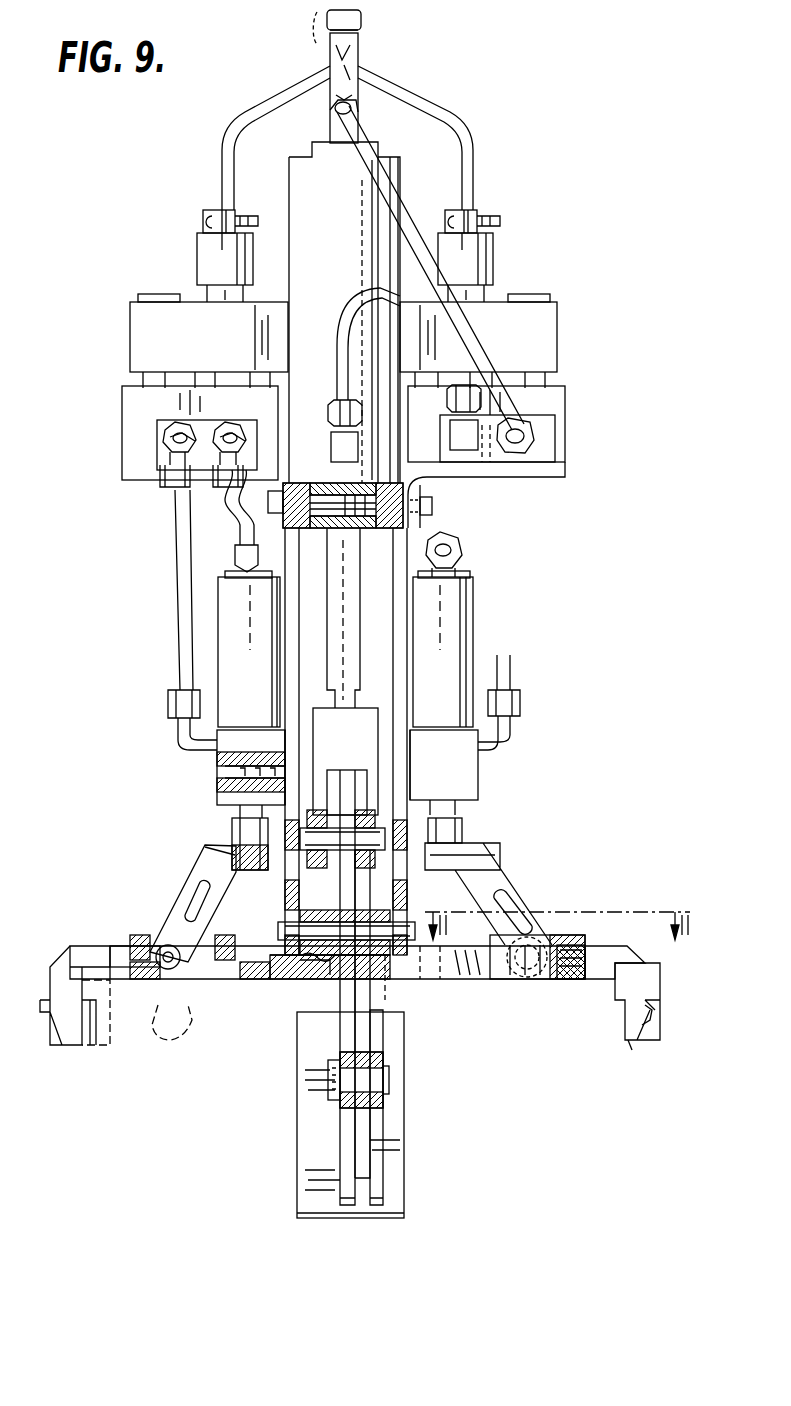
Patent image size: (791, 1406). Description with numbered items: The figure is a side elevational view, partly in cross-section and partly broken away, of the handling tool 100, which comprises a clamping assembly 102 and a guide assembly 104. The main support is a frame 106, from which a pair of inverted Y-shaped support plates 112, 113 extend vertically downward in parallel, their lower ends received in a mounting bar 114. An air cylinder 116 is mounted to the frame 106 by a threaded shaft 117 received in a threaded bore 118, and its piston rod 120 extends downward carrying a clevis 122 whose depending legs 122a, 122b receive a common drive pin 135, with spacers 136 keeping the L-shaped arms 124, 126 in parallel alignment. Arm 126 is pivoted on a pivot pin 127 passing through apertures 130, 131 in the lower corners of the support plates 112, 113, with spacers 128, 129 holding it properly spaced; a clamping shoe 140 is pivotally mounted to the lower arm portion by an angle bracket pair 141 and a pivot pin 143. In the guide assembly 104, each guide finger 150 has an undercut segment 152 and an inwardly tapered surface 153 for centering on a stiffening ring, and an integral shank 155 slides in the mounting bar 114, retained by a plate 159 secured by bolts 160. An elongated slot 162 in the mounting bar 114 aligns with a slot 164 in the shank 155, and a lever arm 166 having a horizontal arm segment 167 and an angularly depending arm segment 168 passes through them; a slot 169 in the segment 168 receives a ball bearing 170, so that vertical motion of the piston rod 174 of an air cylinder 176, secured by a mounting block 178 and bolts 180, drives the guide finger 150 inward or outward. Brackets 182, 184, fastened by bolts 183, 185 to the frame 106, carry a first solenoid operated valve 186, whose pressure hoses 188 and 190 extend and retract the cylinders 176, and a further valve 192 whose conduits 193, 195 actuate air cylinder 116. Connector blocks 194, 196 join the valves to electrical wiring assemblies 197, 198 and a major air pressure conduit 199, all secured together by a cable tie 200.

The handling tool 100 is at (642, 182).
The clamping assembly 102 is at (247, 1168).
The guide assembly 104 is at (592, 795).
The frame 106 is at (440, 545).
The support plate 112 is at (290, 665).
The support plate 113 is at (393, 660).
The mounting bar 114 is at (490, 979).
The air cylinder 116 is at (358, 236).
The threaded shaft 117 is at (352, 470).
The threaded bore 118 is at (335, 520).
The piston rod 120 is at (356, 611).
The clevis 122 is at (358, 731).
The depending leg of clevis 122a is at (285, 778).
The depending leg of clevis 122b is at (393, 800).
The L-shaped arm 124 is at (340, 1000).
The L-shaped arm 126 is at (375, 1010).
The pivot pin 127 is at (365, 950).
The spacer 128 is at (405, 920).
The spacer 129 is at (300, 965).
The aperture 130 is at (410, 955).
The aperture 131 is at (285, 968).
The common drive pin 135 is at (350, 885).
The spacer 136 is at (358, 763).
The clamping shoe 140 is at (404, 1185).
The angle bracket pair 141 is at (345, 1200).
The pivot pin 143 is at (383, 1080).
The guide finger 150 is at (44, 1015).
The undercut segment 152 is at (652, 1015).
The inwardly tapered surface 153 is at (640, 1045).
The integral shank 155 is at (607, 960).
The plate 159 is at (545, 935).
The bolt 160 is at (565, 975).
The elongated slot 162 is at (165, 985).
The elongated slot 164 is at (130, 950).
The lever arm 166 is at (500, 860).
The horizontal arm segment 167 is at (207, 866).
The depending arm segment 168 is at (525, 905).
The elongated slot 169 is at (182, 920).
The ball bearing 170 is at (200, 912).
The piston rod 174 is at (232, 842).
The air cylinder 176 is at (261, 694).
The mounting block 178 is at (458, 779).
The bolt 180 is at (217, 778).
The bracket 182 is at (160, 480).
The bolt 183 is at (268, 503).
The bracket 184 is at (565, 470).
The bolt 185 is at (432, 505).
The solenoid operated valve 186 is at (122, 428).
The pressure hose 188 is at (250, 440).
The pressure hose 190 is at (180, 605).
The solenoid operated valve 192 is at (565, 420).
The conduit 193 is at (375, 175).
The connector block 194 is at (198, 346).
The conduit 195 is at (365, 295).
The connector block 196 is at (528, 346).
The electrical wiring assembly 197 is at (222, 140).
The electrical wiring assembly 198 is at (473, 140).
The major air pressure conduit 199 is at (346, 88).
The cable tie 200 is at (361, 18).